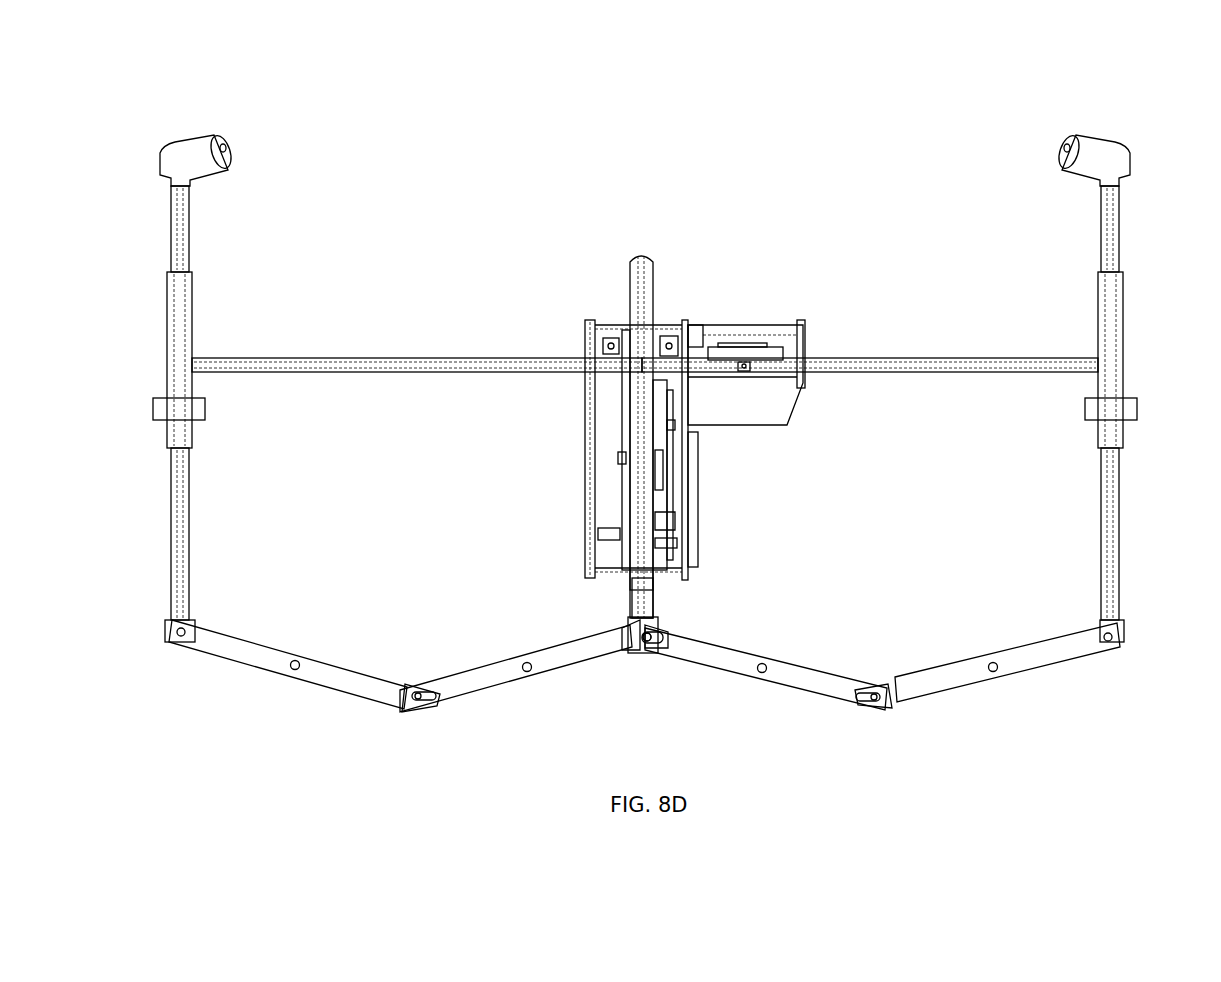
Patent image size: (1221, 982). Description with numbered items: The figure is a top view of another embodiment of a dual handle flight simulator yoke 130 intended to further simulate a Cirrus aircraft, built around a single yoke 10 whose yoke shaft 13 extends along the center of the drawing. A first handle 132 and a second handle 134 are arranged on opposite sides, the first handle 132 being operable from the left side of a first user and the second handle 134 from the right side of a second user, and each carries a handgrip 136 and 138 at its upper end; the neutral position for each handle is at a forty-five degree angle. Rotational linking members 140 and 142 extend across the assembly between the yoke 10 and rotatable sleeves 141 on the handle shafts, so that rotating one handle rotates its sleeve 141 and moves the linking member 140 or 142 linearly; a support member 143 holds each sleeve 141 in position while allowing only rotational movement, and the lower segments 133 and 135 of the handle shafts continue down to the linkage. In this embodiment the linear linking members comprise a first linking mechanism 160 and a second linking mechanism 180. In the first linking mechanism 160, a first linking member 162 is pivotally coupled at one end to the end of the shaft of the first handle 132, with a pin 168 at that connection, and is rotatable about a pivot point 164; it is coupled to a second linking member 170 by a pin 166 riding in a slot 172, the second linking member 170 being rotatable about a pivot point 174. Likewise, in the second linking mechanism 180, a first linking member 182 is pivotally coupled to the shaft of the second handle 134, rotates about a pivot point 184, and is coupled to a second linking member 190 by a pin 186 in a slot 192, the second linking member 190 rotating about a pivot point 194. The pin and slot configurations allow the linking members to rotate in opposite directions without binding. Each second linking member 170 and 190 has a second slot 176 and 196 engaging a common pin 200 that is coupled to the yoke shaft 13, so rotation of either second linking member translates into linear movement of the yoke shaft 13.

The yoke 10 is at (700, 292).
The yoke shaft 13 is at (625, 583).
The dual handle flight simulator yoke 130 is at (585, 100).
The first handle 132 is at (1030, 112).
The right lower post segment 133 is at (1118, 490).
The second handle 134 is at (275, 152).
The left lower post segment 135 is at (178, 510).
The handgrip 136 is at (1075, 168).
The handgrip 138 is at (205, 167).
The rotational linking member 140 is at (925, 360).
The rotatable sleeve 141 is at (1120, 318).
The rotational linking member 142 is at (302, 358).
The support member 143 is at (1120, 410).
The first linking mechanism 160 is at (960, 608).
The first linking member 162 is at (950, 680).
The pivot point 164 is at (996, 664).
The pin 166 is at (870, 705).
The right leg pivot pin 168 is at (1118, 636).
The second linking member 170 is at (795, 680).
The slot 172 is at (862, 700).
The pivot point 174 is at (758, 672).
The second slot 176 is at (660, 650).
The second linking mechanism 180 is at (405, 618).
The first linking member 182 is at (340, 685).
The pivot point 184 is at (295, 662).
The pin 186 is at (410, 705).
The second linking member 190 is at (495, 678).
The slot 192 is at (425, 700).
The pivot point 194 is at (530, 668).
The second slot 196 is at (628, 652).
The pin 200 is at (648, 638).